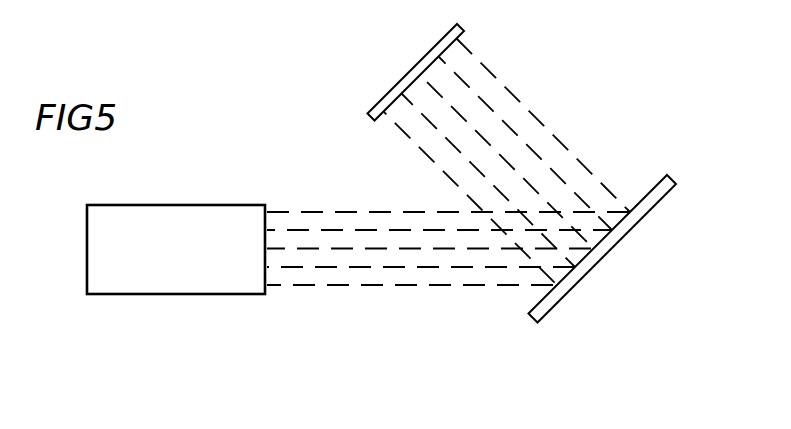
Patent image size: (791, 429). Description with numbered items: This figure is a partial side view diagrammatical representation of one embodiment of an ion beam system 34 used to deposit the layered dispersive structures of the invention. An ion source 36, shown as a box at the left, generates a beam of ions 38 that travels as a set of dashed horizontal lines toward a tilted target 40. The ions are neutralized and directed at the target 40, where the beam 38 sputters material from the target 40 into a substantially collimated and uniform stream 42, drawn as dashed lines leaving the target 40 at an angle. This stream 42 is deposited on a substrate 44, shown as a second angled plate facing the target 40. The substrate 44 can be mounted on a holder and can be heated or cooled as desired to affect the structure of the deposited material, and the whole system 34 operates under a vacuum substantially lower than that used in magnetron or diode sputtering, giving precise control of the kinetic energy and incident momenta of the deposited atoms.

The ion beam system 34 is at (423, 228).
The ion source 36 is at (181, 258).
The beam of ions 38 is at (398, 287).
The target 40 is at (624, 234).
The collimated and uniform stream 42 is at (565, 153).
The substrate 44 is at (418, 63).